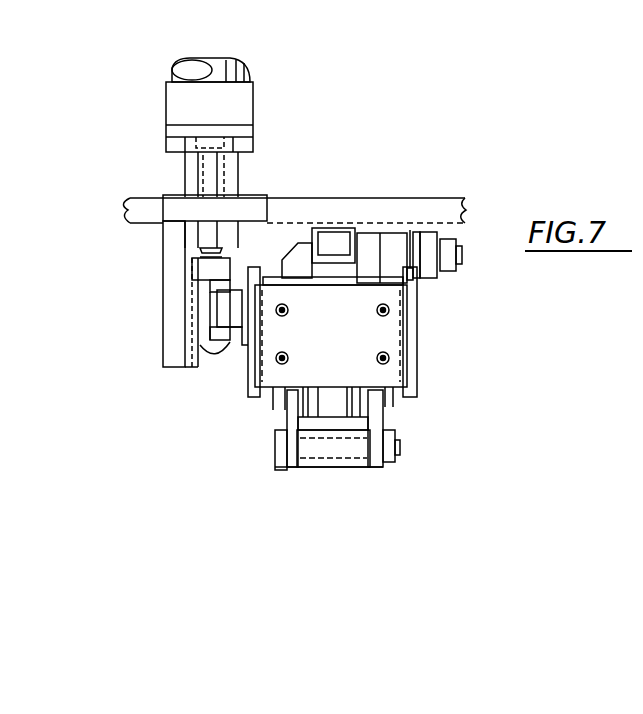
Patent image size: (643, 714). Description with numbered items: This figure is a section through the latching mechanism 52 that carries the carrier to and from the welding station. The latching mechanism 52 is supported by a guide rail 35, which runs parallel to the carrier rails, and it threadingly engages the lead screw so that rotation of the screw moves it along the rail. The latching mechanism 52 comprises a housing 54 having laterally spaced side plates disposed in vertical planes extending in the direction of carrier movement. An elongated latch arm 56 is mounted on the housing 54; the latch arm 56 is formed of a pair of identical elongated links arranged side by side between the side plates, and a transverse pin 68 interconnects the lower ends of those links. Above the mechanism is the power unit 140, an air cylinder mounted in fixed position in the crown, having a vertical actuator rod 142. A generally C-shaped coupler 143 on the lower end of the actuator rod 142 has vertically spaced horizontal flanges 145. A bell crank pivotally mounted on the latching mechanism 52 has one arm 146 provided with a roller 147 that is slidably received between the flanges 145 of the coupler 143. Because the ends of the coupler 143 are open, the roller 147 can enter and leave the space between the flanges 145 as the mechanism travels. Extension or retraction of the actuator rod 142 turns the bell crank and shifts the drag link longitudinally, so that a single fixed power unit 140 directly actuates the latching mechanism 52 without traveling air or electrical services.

The power unit 140 is at (258, 108).
The actuator rod 142 is at (237, 240).
The guide rail 35 is at (330, 238).
The coupler 143 is at (200, 253).
The horizontal flanges 145 is at (210, 282).
The roller 147 is at (230, 302).
The arm 146 is at (246, 343).
The housing 54 is at (250, 384).
The latching mechanism 52 is at (422, 333).
The latch arm 56 is at (387, 413).
The transverse pin 68 is at (357, 467).